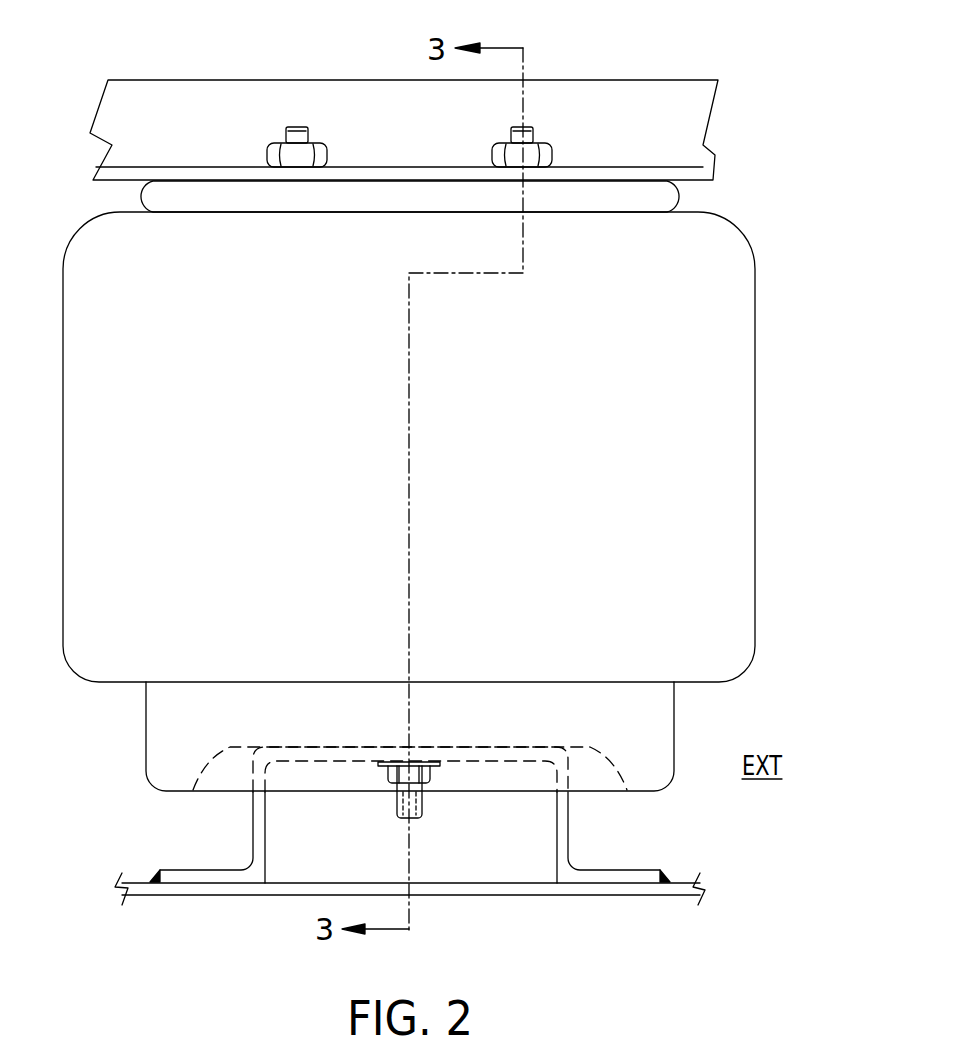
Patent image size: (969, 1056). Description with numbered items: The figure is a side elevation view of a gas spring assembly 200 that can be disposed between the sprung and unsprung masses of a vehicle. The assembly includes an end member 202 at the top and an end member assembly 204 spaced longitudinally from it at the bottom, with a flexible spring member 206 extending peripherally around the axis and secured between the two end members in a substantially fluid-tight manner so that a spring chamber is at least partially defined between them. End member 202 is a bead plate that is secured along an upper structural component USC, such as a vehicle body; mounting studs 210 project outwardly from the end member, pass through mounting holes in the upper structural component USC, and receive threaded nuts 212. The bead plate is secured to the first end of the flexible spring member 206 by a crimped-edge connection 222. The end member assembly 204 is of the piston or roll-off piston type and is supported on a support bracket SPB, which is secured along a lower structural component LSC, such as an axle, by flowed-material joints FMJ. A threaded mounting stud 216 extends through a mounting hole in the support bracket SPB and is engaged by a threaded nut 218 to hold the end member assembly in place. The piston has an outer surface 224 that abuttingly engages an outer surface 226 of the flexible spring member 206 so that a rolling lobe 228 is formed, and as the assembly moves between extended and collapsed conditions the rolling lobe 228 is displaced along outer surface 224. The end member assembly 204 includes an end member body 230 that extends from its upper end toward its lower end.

The gas spring assembly 200 is at (728, 165).
The end member 202 is at (215, 191).
The end member assembly 204 is at (700, 734).
The flexible spring member 206 is at (766, 381).
The mounting studs 210 is at (308, 137).
The threaded nuts 212 is at (327, 157).
The threaded mounting stud 216 is at (423, 800).
The threaded nut 218 is at (440, 770).
The crimped-edge connection 222 is at (683, 195).
The outer surface 224 is at (146, 740).
The outer surface 226 is at (755, 478).
The rolling lobe 228 is at (107, 685).
The end member body 230 is at (150, 783).
The upper structural component USC is at (645, 97).
The lower structural component LSC is at (500, 888).
The support bracket SPB is at (260, 838).
The flowed-material joints FMJ is at (157, 877).